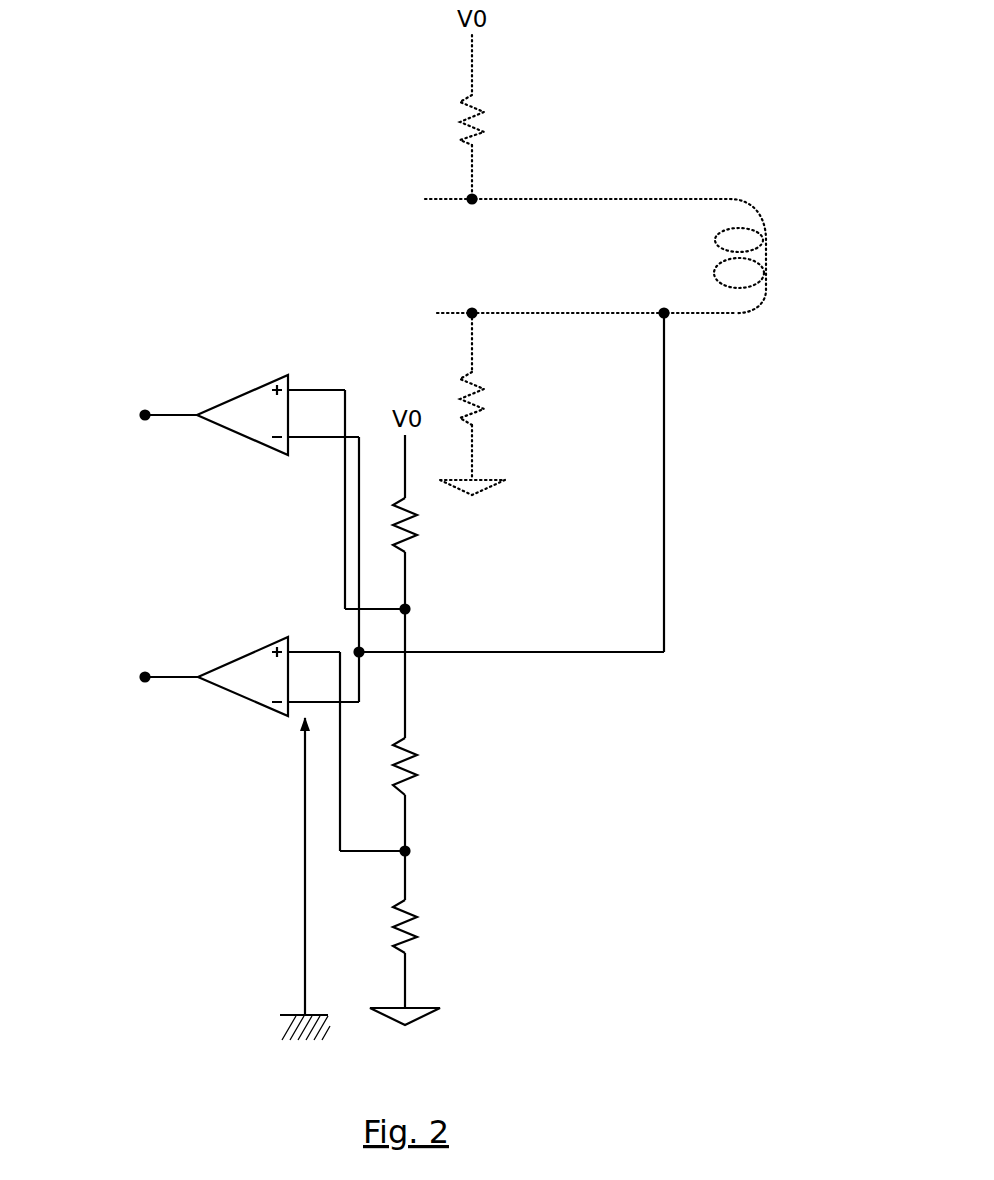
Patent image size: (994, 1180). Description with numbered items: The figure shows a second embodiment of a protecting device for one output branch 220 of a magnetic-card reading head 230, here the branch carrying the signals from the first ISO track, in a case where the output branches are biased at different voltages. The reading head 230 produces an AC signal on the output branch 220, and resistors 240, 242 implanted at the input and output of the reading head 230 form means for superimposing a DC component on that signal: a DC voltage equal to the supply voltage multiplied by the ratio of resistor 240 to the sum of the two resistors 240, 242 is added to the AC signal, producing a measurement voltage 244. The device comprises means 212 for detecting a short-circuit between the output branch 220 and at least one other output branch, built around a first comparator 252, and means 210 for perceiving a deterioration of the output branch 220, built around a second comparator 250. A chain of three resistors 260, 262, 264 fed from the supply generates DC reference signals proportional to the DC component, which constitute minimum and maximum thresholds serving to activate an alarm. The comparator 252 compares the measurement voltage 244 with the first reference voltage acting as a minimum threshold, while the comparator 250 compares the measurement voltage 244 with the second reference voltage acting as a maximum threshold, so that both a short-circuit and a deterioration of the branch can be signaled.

The means for perceiving a deterioration 210 is at (202, 471).
The means for detecting a short-circuit 212 is at (185, 688).
The output branch 220 is at (632, 199).
The reading head 230 is at (743, 298).
The resistor 240 is at (476, 119).
The resistor 242 is at (475, 393).
The measurement voltage 244 is at (292, 879).
The comparator 250 is at (253, 398).
The comparator 252 is at (242, 682).
The resistor 260 is at (410, 545).
The resistor 262 is at (412, 763).
The resistor 264 is at (412, 925).